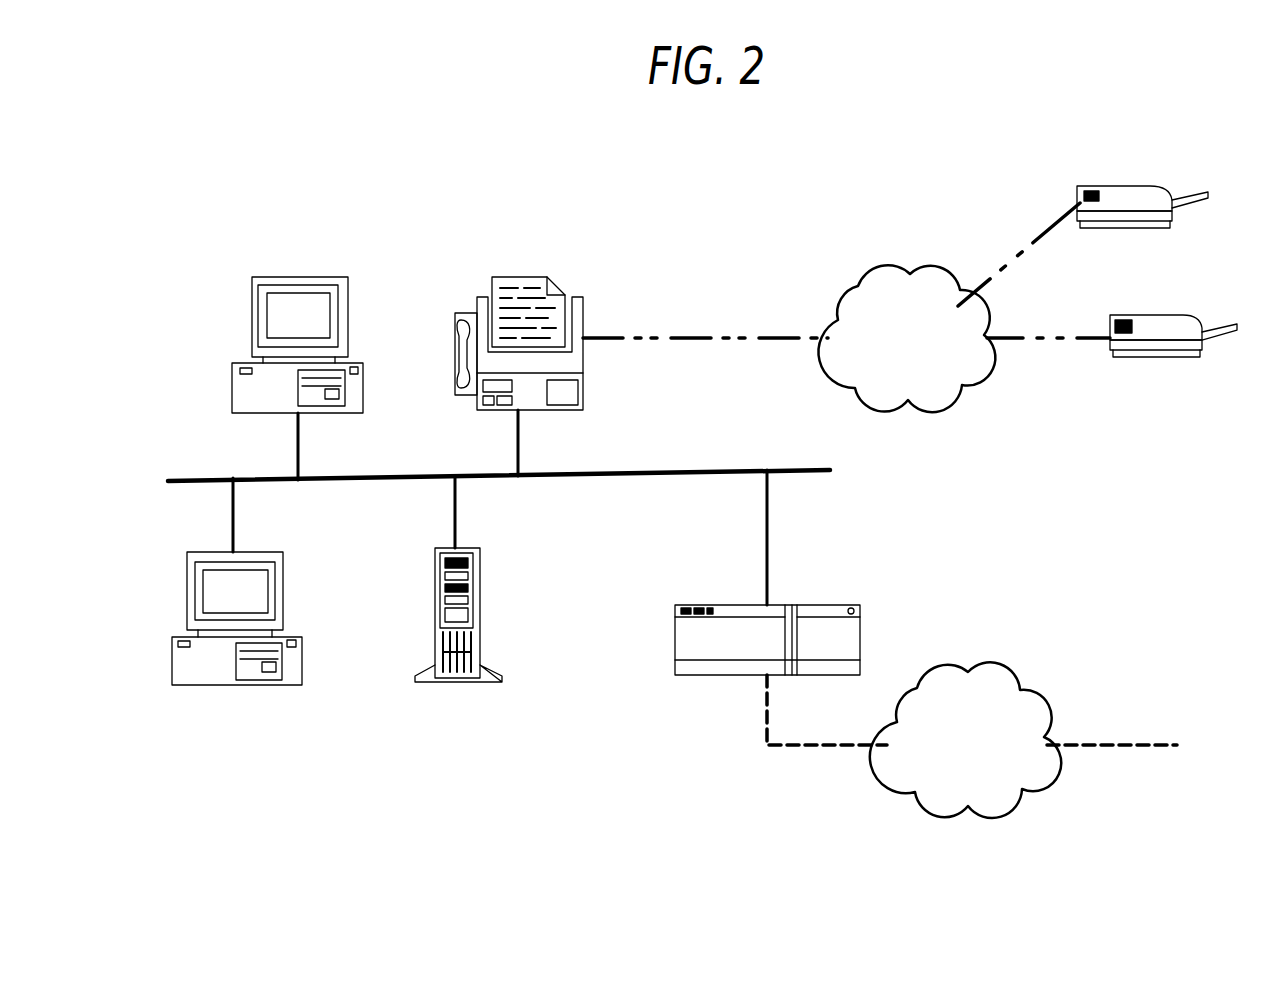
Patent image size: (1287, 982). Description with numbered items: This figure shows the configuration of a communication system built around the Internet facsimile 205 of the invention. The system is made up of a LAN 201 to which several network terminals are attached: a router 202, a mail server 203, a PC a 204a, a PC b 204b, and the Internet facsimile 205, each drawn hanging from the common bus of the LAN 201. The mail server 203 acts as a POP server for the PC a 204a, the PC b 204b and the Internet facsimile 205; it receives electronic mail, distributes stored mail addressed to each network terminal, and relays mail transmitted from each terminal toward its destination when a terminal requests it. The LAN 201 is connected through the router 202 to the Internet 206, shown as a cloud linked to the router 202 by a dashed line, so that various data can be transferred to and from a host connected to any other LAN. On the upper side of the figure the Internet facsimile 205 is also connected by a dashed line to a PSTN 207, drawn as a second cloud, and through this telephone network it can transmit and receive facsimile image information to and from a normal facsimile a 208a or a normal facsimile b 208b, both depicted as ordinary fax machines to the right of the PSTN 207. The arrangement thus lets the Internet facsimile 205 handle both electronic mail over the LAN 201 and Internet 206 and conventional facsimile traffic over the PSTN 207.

The LAN 201 is at (660, 472).
The router 202 is at (798, 605).
The mail server 203 is at (470, 546).
The PC a 204a is at (267, 277).
The PC b 204b is at (248, 549).
The Internet facsimile 205 is at (575, 297).
The Internet 206 is at (998, 668).
The PSTN 207 is at (882, 272).
The normal facsimile a 208a is at (1143, 314).
The normal facsimile b 208b is at (1113, 186).